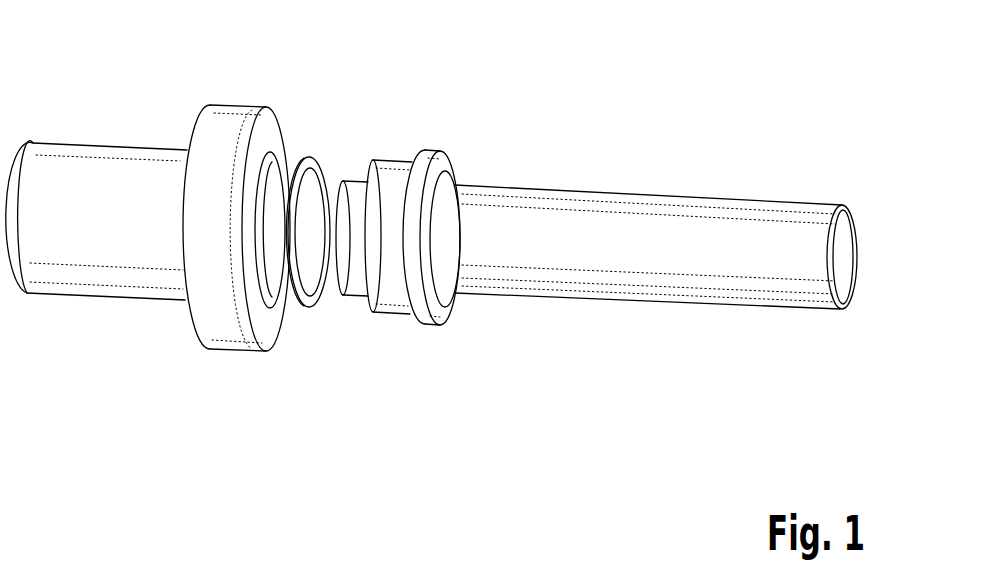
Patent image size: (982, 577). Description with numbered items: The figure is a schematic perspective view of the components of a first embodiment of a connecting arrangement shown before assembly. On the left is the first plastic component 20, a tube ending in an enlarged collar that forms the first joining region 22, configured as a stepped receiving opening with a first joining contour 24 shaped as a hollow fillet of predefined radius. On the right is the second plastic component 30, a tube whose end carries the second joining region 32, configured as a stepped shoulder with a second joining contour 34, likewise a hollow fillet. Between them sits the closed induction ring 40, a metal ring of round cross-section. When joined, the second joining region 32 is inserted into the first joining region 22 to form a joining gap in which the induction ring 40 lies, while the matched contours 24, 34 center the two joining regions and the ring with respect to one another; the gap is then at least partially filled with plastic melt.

The first plastic component 20 is at (105, 157).
The first joining region 22 is at (301, 340).
The first joining contour 24 is at (277, 184).
The closed induction ring 40 is at (317, 287).
The second joining region 32 is at (420, 104).
The second joining contour 34 is at (360, 175).
The second plastic component 30 is at (642, 200).